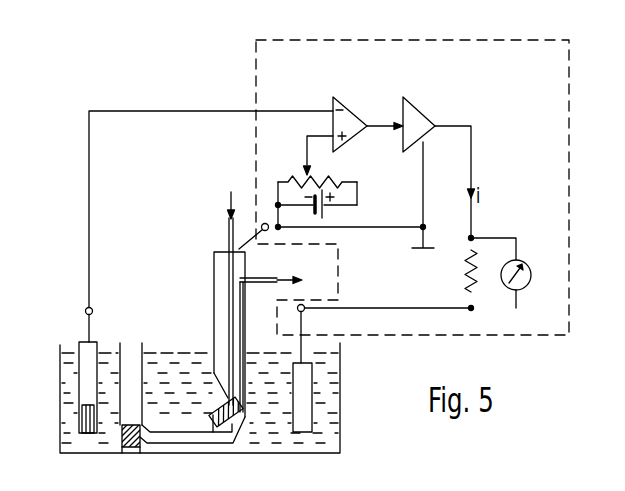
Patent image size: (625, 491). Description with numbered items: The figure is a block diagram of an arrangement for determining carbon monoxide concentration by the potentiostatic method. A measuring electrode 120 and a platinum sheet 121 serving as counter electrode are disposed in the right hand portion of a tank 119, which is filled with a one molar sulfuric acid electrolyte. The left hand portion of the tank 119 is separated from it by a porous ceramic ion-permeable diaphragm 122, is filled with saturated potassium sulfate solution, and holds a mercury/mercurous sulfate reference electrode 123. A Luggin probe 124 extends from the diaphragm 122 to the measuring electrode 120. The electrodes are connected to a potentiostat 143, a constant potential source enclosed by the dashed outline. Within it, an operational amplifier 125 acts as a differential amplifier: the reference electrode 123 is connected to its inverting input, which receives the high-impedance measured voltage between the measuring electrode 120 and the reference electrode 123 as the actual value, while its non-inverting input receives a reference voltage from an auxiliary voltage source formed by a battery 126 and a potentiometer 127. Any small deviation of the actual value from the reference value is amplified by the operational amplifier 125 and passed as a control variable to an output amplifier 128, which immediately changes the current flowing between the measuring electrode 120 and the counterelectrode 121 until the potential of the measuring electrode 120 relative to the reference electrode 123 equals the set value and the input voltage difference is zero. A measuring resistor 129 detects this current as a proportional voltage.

The potentiostat 143 is at (380, 39).
The operational amplifier 125 is at (340, 104).
The output amplifier 128 is at (424, 107).
The potentiometer 127 is at (335, 171).
The battery 126 is at (323, 208).
The measuring resistor 129 is at (464, 282).
The measuring electrode 120 is at (214, 296).
The reference electrode 123 is at (84, 352).
The platinum sheet 121 is at (304, 376).
The porous ceramic ion-permeable diaphragm 122 is at (131, 449).
The Luggin probe 124 is at (180, 433).
The tank 119 is at (271, 454).